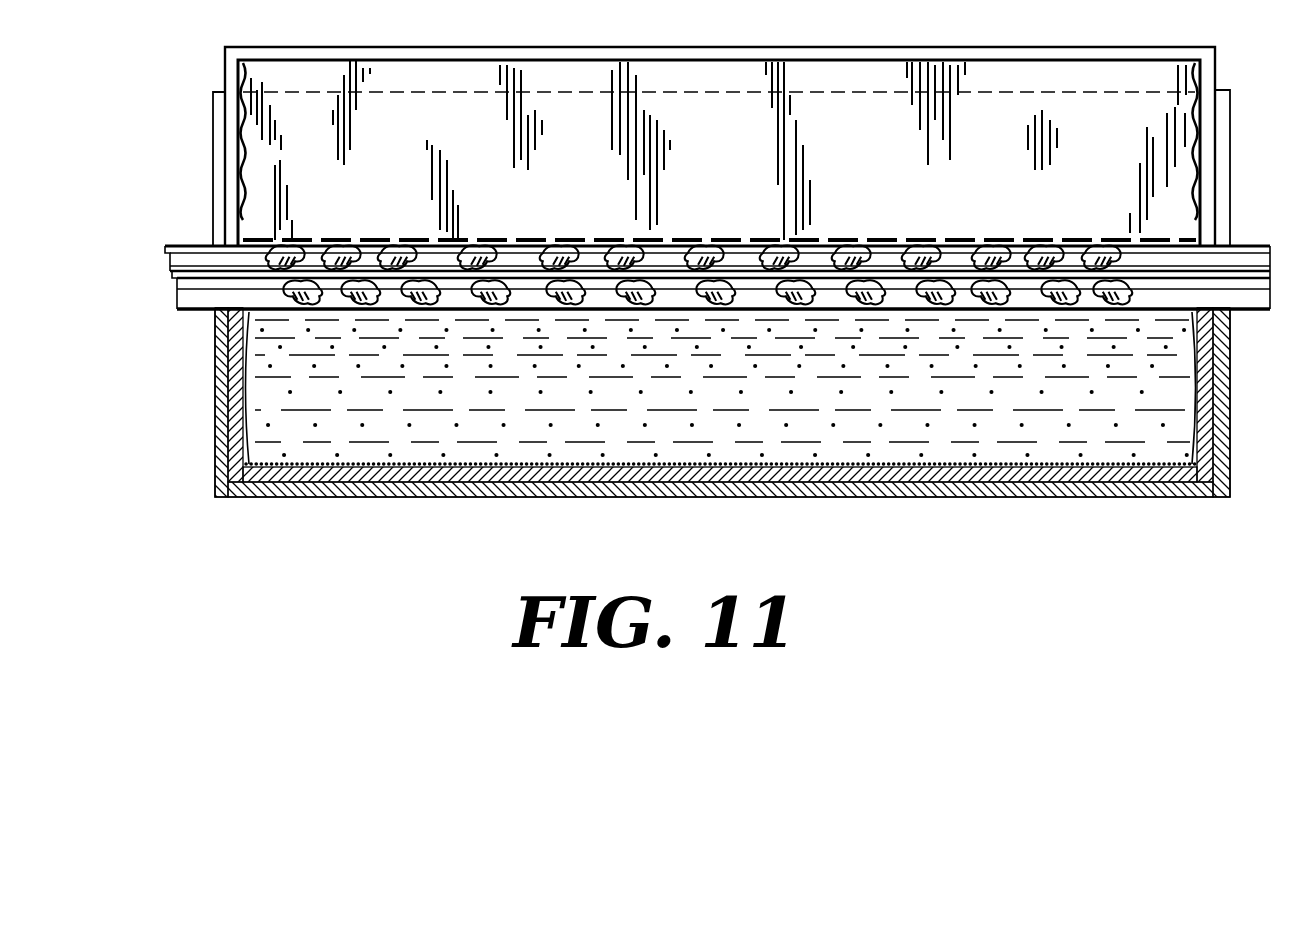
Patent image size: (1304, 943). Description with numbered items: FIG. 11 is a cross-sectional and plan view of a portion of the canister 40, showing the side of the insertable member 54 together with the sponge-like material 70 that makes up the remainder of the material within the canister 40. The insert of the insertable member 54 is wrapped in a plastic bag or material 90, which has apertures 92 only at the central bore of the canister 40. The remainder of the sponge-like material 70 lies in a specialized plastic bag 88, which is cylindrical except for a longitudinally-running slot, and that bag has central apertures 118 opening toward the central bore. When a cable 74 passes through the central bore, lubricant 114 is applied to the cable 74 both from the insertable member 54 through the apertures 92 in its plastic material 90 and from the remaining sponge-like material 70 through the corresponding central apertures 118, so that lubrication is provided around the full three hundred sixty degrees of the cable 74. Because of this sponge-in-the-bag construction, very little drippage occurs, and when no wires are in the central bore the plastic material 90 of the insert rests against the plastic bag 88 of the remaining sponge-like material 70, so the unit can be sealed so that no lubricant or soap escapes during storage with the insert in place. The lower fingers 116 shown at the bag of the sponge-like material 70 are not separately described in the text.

The canister 40 is at (195, 462).
The insertable member 54 is at (602, 125).
The sponge-like material 70 is at (728, 422).
The cable 74 is at (196, 250).
The specialized plastic bag 88 is at (1213, 393).
The plastic bag or material 90 is at (980, 118).
The apertures 92 is at (606, 241).
The lubricant 114 is at (398, 240).
The lower fingers 116 is at (365, 310).
The central apertures 118 is at (528, 310).